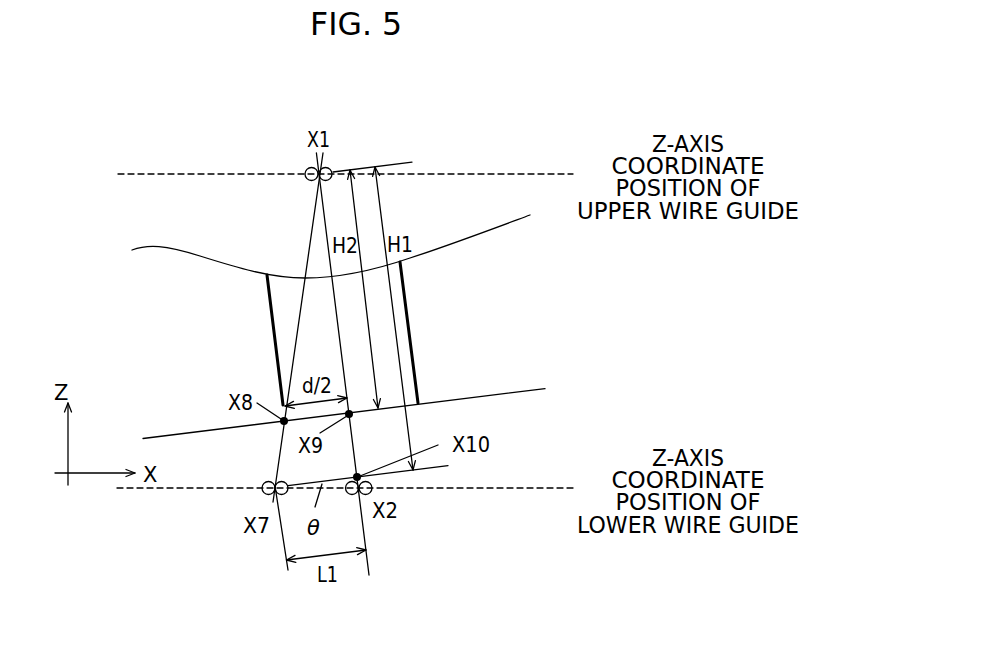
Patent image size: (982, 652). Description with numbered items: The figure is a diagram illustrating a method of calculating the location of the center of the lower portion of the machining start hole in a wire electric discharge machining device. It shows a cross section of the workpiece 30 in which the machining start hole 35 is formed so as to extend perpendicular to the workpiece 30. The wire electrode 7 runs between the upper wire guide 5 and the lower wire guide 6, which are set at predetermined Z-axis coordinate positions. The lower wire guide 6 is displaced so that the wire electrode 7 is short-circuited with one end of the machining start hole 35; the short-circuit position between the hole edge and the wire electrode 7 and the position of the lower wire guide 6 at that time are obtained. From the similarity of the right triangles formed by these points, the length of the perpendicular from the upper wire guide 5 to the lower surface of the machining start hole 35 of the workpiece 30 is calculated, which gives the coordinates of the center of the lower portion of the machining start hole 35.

The upper wire guide 5 is at (305, 172).
The lower wire guide 6 is at (265, 494).
The wire electrode 7 is at (323, 236).
The workpiece 30 is at (180, 265).
The machining start hole 35 is at (285, 312).